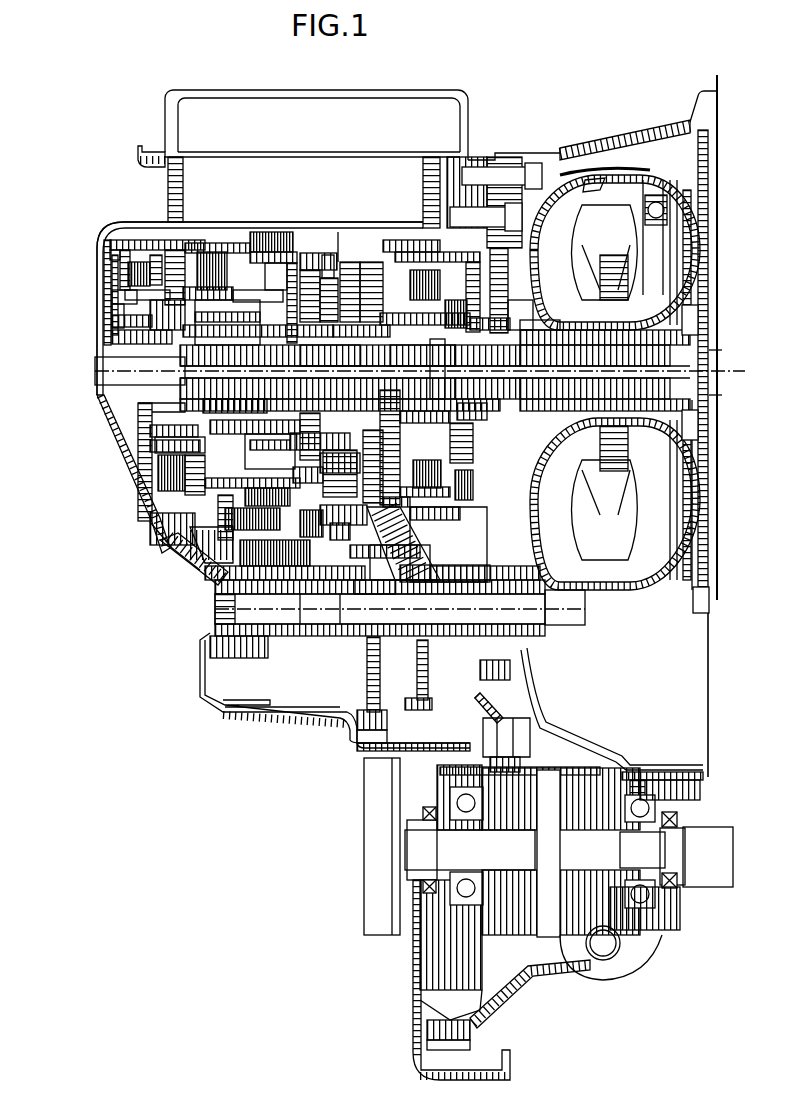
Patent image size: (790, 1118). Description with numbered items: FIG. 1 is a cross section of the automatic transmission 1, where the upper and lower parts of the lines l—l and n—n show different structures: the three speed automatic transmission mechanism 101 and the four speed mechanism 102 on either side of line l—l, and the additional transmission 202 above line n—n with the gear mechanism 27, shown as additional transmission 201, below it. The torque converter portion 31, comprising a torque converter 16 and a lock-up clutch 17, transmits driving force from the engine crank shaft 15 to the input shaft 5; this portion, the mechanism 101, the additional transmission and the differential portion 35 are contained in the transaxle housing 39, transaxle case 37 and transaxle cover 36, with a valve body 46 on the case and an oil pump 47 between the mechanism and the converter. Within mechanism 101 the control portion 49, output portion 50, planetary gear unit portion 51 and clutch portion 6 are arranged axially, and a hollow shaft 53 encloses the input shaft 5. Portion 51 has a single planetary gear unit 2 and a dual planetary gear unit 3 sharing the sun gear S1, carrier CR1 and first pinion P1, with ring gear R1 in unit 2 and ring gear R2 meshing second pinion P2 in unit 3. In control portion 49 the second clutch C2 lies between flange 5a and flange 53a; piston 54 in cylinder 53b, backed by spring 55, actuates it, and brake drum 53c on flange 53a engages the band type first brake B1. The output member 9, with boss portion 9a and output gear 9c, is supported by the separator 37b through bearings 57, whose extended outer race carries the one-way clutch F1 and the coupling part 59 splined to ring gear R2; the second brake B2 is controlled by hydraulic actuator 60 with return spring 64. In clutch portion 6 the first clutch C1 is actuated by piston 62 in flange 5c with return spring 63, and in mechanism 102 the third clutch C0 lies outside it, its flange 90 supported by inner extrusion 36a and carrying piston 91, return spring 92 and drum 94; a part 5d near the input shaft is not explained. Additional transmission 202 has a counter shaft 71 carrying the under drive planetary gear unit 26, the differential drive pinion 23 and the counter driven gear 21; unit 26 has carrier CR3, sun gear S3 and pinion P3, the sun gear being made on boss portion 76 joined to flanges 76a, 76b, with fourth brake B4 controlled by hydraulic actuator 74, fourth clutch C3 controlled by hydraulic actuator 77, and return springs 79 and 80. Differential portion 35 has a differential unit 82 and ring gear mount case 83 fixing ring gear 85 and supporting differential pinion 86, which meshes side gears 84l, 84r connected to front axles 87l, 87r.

The automatic transmission 1 is at (107, 128).
The single planetary gear unit 2 is at (222, 288).
The dual planetary gear unit 3 is at (248, 300).
The input shaft 5 is at (98, 390).
The flange 5a is at (441, 369).
The flange 5c is at (152, 441).
The end portion 5d is at (112, 297).
The clutch portion 6 is at (146, 232).
The output member 9 is at (424, 346).
The boss portion 9a is at (361, 352).
The output gear 9c is at (370, 260).
The engine crank shaft 15 is at (712, 356).
The torque converter 16 is at (584, 173).
The lock-up clutch 17 is at (680, 212).
The counter driven gear 21 is at (366, 740).
The differential drive pinion 23 is at (467, 578).
The single planetary gear unit for under drive 26 is at (345, 609).
The gear mechanism 27 is at (383, 674).
The torque converter portion 31 is at (598, 170).
The differential portion 35 is at (598, 748).
The transaxle cover 36 is at (108, 277).
The inner extrusion 36a is at (110, 338).
The transaxle case 37 is at (322, 722).
The separator 37b is at (341, 260).
The transaxle housing 39 is at (540, 735).
The valve body 46 is at (460, 114).
The oil pump 47 is at (512, 298).
The control portion 49 is at (445, 240).
The output portion 50 is at (378, 242).
The planetary gear unit portion 51 is at (270, 215).
The hollow shaft 53 is at (255, 388).
The flange 53a is at (422, 362).
The cylinder 53b is at (513, 326).
The brake drum 53c is at (462, 530).
The piston 54 is at (605, 370).
The spring 55 is at (487, 372).
The bearings 57 is at (330, 362).
The coupling part 59 is at (302, 298).
The hydraulic actuator 60 is at (326, 255).
The piston 62 is at (185, 440).
The return spring 63 is at (136, 416).
The return spring 64 is at (252, 500).
The counter shaft 71 is at (212, 638).
The hydraulic actuator 74 is at (190, 545).
The boss portion 76 is at (380, 609).
The flange 76a is at (218, 594).
The flange 76b is at (215, 584).
The hydraulic actuator 77 is at (218, 602).
The return spring 79 is at (305, 609).
The return spring 80 is at (215, 572).
The differential unit 82 is at (567, 922).
The ring gear mount case 83 is at (520, 925).
The side gear 84l is at (490, 925).
The side gear 84r is at (655, 935).
The ring gear 85 is at (475, 1028).
The differential pinion 86 is at (530, 962).
The front axle 87l is at (412, 845).
The front axle 87r is at (702, 837).
The flange 90 is at (112, 258).
The piston 91 is at (110, 290).
The return spring 92 is at (110, 322).
The drum 94 is at (172, 228).
The three speed automatic transmission mechanism 101 is at (142, 500).
The four speed automatic transmission mechanism 102 is at (118, 222).
The additional transmission 201 is at (190, 685).
The additional transmission 202 is at (140, 558).
The first brake B1 is at (540, 250).
The second brake B2 is at (266, 230).
The fourth brake B4 is at (190, 560).
The third clutch C0 is at (114, 242).
The first clutch C1 is at (208, 250).
The second clutch C2 is at (422, 268).
The fourth clutch C3 is at (220, 606).
The carrier CR1 is at (205, 412).
The carrier CR3 is at (545, 610).
The one-way clutch F1 is at (320, 280).
The first pinion P1 is at (227, 340).
The second pinion P2 is at (301, 453).
The pinion P3 is at (390, 583).
The ring gear R1 is at (160, 452).
The ring gear R2 is at (225, 488).
The sun gear S1 is at (258, 353).
The sun gear S3 is at (373, 594).
The line l— l is at (408, 374).
The line n— n is at (393, 608).